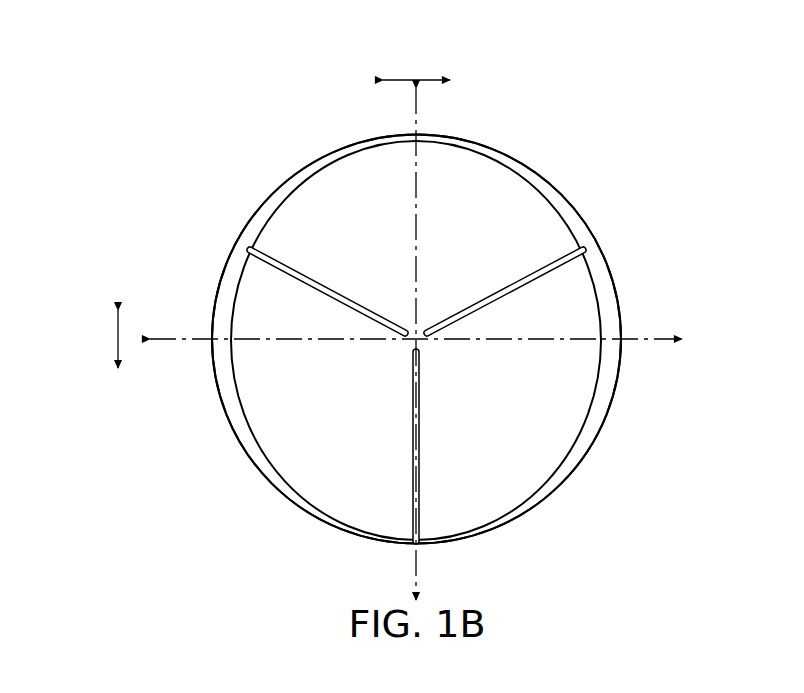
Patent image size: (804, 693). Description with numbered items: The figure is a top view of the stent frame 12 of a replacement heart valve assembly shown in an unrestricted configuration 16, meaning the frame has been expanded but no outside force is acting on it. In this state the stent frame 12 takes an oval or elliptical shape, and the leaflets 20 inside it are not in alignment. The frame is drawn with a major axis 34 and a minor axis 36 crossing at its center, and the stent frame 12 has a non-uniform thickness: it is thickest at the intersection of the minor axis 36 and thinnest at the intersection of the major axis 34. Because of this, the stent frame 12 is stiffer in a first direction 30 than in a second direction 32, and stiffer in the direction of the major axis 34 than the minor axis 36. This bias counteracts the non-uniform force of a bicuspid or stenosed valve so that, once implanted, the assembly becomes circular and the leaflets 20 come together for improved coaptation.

The stent frame 12 is at (537, 173).
The unrestricted configuration 16 is at (603, 204).
The leaflets 20 is at (420, 457).
The first direction 30 is at (117, 339).
The second direction 32 is at (416, 79).
The major axis 34 is at (417, 208).
The minor axis 36 is at (650, 340).